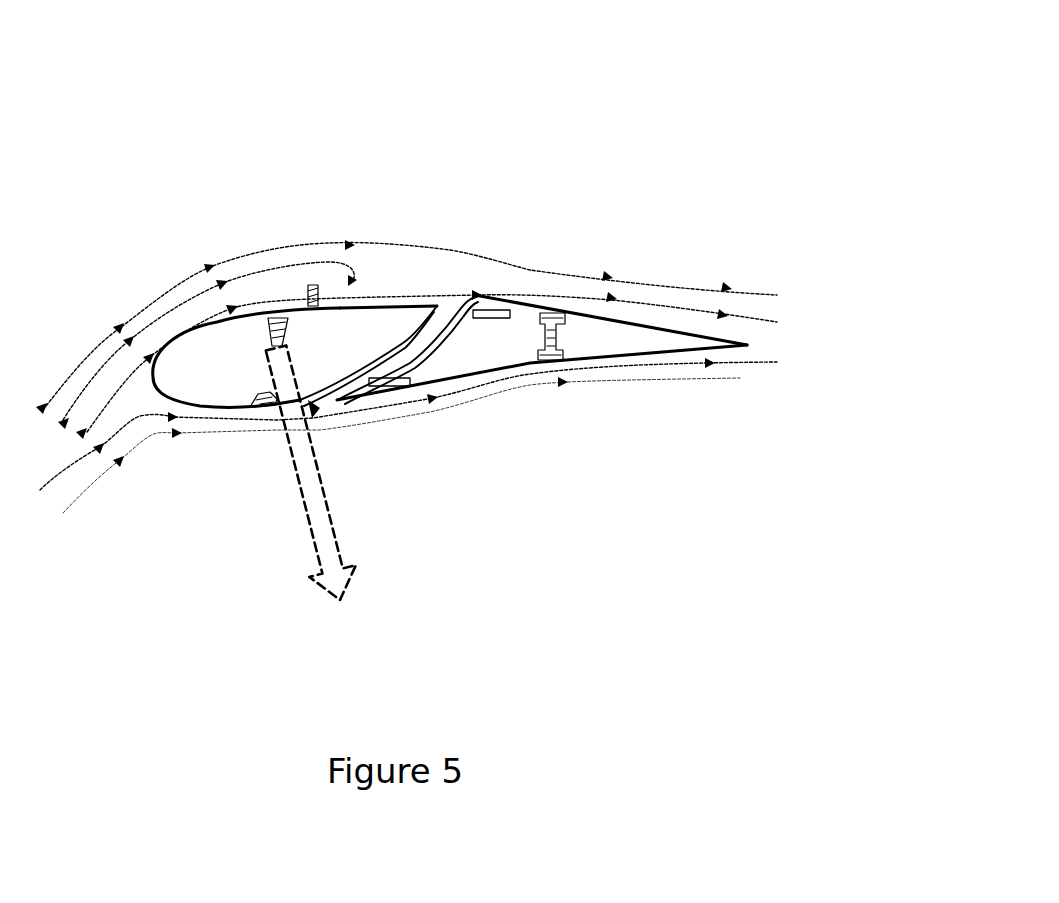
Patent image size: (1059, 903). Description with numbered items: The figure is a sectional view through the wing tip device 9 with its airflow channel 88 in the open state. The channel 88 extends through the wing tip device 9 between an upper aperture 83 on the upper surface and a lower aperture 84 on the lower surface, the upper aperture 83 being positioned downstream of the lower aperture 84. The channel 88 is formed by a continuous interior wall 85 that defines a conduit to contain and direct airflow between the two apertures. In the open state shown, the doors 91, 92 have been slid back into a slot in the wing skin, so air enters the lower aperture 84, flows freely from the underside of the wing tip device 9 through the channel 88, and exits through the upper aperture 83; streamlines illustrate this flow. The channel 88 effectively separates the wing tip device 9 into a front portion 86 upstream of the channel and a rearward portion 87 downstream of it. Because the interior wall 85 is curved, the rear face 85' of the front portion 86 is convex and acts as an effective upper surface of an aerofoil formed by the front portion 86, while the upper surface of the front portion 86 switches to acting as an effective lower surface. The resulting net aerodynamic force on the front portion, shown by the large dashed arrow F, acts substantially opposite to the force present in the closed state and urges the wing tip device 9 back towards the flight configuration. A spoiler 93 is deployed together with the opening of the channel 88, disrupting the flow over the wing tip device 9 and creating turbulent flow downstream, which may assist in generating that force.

The wing tip device 9 is at (173, 137).
The spoiler 93 is at (312, 266).
The airflow channel 88 is at (403, 304).
The upper aperture 83 is at (458, 292).
The door 91 is at (497, 310).
The rear face of the front portion 85' is at (257, 292).
The front portion 86 is at (216, 395).
The lower aperture 84 is at (290, 450).
The door 92 is at (371, 380).
The interior wall 85 is at (447, 449).
The rearward portion 87 is at (587, 376).